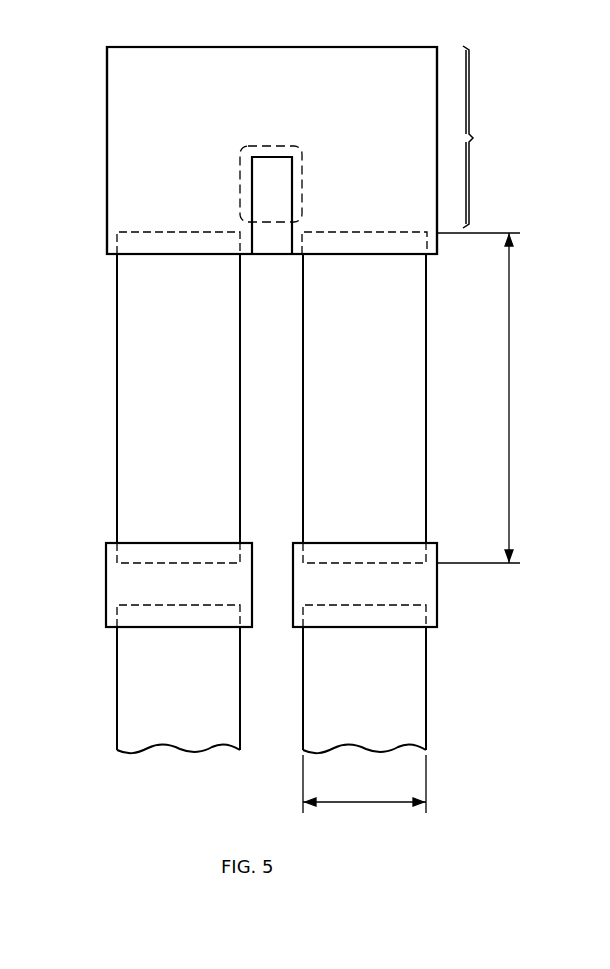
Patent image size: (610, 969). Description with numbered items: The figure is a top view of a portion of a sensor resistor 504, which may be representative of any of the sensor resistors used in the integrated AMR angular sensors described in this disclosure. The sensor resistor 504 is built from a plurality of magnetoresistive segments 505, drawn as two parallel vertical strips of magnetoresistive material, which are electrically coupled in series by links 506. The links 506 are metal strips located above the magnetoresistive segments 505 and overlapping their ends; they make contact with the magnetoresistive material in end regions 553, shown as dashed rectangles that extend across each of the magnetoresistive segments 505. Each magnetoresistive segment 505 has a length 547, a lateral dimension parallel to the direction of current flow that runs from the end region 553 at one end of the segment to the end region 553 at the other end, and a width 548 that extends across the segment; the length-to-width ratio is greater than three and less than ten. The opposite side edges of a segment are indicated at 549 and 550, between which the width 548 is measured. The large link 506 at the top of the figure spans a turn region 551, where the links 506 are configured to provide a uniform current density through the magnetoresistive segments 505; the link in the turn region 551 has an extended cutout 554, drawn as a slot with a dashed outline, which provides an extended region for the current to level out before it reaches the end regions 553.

The sensor resistor 504 is at (540, 86).
The magnetoresistive segments 505 is at (124, 408).
The links 506 is at (113, 150).
The length 547 is at (509, 400).
The width 548 is at (376, 810).
The first side edge of leg 549 is at (305, 387).
The second side edge of leg 550 is at (424, 431).
The turn regions 551 is at (490, 137).
The end regions 553 is at (178, 257).
The extended cutouts 554 is at (306, 185).